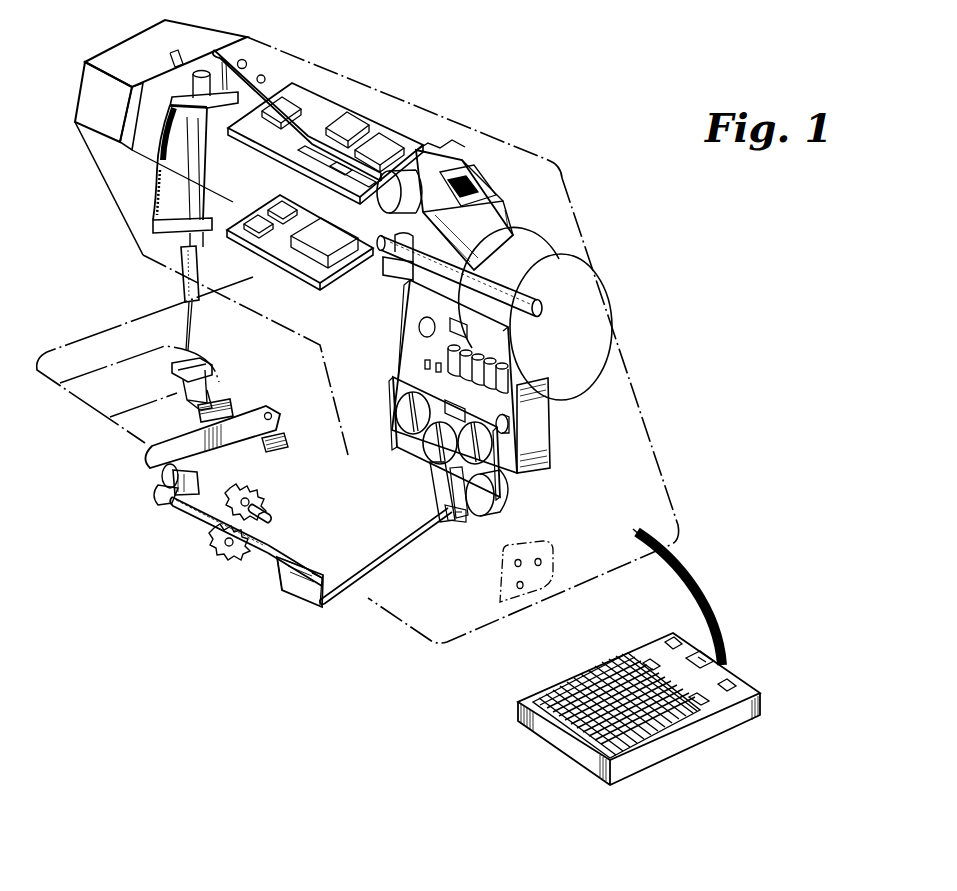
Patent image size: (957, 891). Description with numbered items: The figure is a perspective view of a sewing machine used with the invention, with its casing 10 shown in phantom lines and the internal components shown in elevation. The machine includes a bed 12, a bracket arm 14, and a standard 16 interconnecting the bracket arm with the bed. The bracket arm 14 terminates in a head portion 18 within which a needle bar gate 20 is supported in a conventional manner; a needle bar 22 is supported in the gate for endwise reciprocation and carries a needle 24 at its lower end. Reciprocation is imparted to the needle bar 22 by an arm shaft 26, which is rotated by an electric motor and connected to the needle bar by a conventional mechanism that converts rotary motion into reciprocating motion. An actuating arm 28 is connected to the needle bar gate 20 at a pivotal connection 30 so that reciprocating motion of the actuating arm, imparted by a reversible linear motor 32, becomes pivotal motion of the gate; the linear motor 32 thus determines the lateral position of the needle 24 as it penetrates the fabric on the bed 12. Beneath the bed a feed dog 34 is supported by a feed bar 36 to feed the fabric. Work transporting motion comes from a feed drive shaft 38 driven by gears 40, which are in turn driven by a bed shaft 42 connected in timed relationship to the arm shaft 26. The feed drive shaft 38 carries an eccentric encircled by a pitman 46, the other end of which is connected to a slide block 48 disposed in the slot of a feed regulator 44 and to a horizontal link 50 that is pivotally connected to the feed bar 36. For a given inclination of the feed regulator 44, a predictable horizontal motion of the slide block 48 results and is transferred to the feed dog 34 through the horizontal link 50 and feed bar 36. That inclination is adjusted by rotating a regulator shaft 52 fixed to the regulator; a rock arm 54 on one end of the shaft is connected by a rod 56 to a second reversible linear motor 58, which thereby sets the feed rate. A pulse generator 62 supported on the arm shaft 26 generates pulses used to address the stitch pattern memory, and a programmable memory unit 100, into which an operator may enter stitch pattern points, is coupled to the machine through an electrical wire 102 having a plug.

The sewing machine casing 10 is at (598, 163).
The bed 12 is at (82, 343).
The bracket arm 14 is at (393, 100).
The standard 16 is at (630, 357).
The head portion 18 is at (100, 180).
The needle bar gate 20 is at (163, 192).
The needle bar 22 is at (185, 283).
The needle 24 is at (190, 333).
The arm shaft 26 is at (543, 312).
The actuating arm 28 is at (300, 140).
The pivotal connection 30 is at (228, 78).
The linear motor 32 is at (490, 187).
The feed dog 34 is at (217, 367).
The feed bar 36 is at (227, 405).
The feed drive shaft 38 is at (195, 515).
The gears 40 is at (258, 494).
The bed shaft 42 is at (265, 510).
The feed regulator 44 is at (193, 483).
The pitman 46 is at (163, 485).
The slide block 48 is at (170, 473).
The horizontal link 50 is at (198, 443).
The regulator shaft 52 is at (272, 543).
The rock arm 54 is at (303, 578).
The rod 56 is at (413, 540).
The second reversible linear motor 58 is at (540, 430).
The pulse generator 62 is at (390, 268).
The programmable memory unit 100 is at (673, 747).
The electrical wire 102 is at (721, 634).